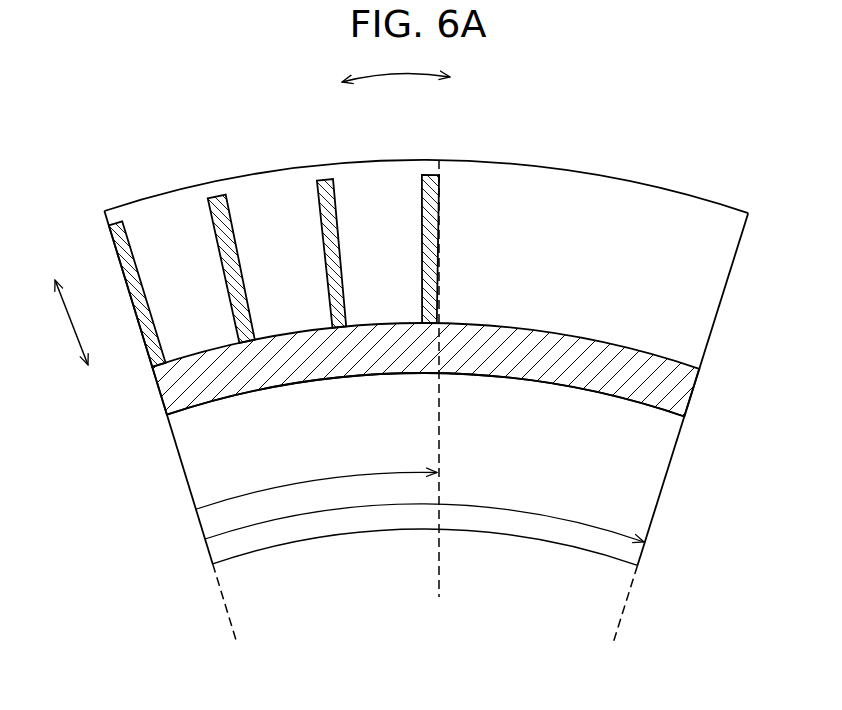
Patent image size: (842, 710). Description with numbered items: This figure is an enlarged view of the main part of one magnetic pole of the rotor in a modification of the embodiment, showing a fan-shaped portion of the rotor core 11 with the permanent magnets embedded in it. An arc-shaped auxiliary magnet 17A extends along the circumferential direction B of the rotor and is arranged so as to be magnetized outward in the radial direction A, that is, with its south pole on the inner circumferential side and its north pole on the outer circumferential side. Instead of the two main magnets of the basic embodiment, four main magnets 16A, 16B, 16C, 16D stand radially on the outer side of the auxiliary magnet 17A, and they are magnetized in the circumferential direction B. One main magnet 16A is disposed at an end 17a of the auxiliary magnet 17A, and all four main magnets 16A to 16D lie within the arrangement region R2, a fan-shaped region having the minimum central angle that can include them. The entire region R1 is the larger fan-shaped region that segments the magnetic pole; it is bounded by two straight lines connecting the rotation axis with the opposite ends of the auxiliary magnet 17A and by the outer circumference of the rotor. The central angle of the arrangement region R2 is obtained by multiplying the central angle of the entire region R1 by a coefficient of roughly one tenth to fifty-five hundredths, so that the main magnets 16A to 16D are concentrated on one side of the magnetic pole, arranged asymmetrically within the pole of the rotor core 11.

The rotor core 11 is at (426, 401).
The main magnet 16A is at (113, 226).
The main magnet 16B is at (215, 199).
The main magnet 16C is at (323, 180).
The main magnet 16D is at (433, 175).
The auxiliary magnet 17A is at (160, 387).
The end of the auxiliary magnet 17a is at (166, 410).
The entire region R1 is at (655, 488).
The arrangement region R2 is at (208, 526).
The radial direction A is at (67, 322).
The circumferential direction B is at (396, 68).